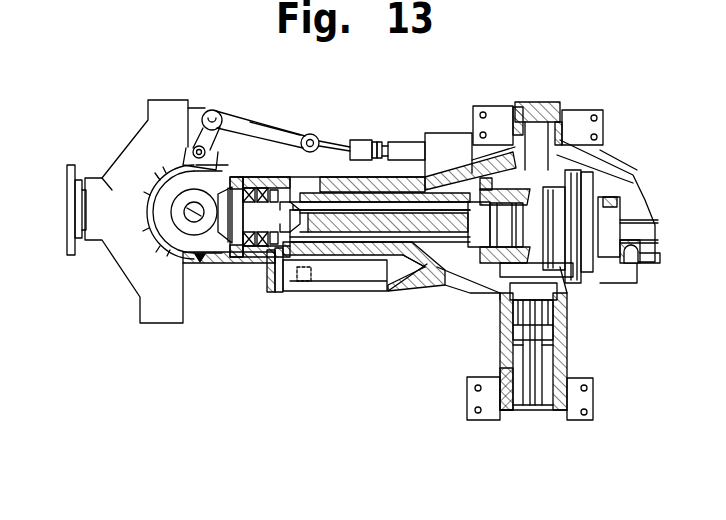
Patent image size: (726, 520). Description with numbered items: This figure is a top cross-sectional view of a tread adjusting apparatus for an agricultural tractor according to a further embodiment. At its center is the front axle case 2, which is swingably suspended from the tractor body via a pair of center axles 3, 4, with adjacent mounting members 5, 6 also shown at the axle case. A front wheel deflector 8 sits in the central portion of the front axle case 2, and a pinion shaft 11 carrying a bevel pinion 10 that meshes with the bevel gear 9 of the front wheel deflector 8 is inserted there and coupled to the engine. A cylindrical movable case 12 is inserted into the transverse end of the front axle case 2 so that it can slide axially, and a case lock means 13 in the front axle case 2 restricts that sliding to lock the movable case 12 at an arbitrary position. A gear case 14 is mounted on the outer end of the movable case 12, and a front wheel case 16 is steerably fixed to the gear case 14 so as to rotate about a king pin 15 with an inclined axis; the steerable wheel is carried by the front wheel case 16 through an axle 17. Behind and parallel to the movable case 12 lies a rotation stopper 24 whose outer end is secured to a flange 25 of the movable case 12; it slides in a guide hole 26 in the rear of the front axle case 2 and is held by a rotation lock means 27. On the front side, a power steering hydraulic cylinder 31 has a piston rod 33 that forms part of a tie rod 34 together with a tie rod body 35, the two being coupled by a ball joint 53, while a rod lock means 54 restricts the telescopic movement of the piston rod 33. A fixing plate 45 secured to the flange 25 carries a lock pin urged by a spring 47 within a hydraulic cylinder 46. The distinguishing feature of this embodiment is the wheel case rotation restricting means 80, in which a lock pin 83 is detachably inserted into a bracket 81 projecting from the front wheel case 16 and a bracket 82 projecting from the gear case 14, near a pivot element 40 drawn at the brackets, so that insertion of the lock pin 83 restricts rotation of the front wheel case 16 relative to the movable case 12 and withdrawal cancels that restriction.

The front axle case 2 is at (433, 262).
The center axle 3 is at (562, 122).
The center axle 4 is at (556, 366).
The upper mount 5 is at (511, 118).
The lower mount 6 is at (504, 408).
The front wheel deflector 8 is at (622, 172).
The bevel gear 9 is at (602, 182).
The bevel pinion 10 is at (508, 300).
The pinion shaft 11 is at (545, 316).
The movable case 12 is at (349, 262).
The case lock means 13 is at (292, 228).
The gear case 14 is at (216, 264).
The king pin 15 is at (188, 220).
The front wheel case 16 is at (117, 182).
The axle 17 is at (72, 233).
The rotation stopper 24 is at (322, 284).
The flange 25 is at (268, 281).
The guide hole 26 is at (372, 252).
The rotation lock means 27 is at (302, 292).
The hydraulic cylinder 31 is at (445, 138).
The piston rod 33 is at (404, 142).
The tie rod 34 is at (244, 118).
The tie rod body 35 is at (282, 133).
The pivot pin 40 is at (190, 153).
The fixing plate 45 is at (413, 270).
The hydraulic cylinder 46 is at (406, 270).
The spring 47 is at (198, 265).
The ball joint 53 is at (312, 133).
The rod lock means 54 is at (365, 150).
The wheel case rotation restricting means 80 is at (186, 150).
The bracket 81 is at (213, 109).
The bracket 82 is at (218, 167).
The lock pin 83 is at (203, 112).